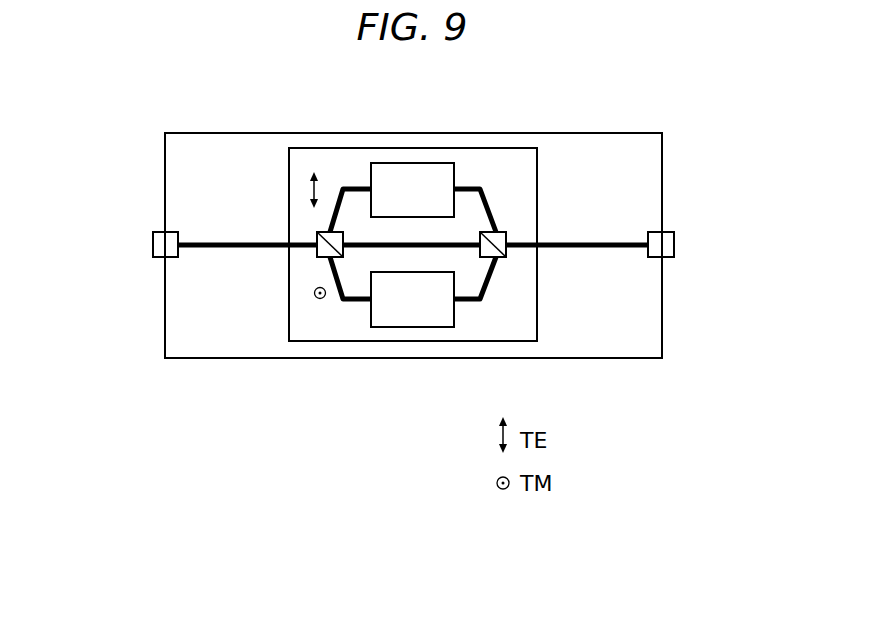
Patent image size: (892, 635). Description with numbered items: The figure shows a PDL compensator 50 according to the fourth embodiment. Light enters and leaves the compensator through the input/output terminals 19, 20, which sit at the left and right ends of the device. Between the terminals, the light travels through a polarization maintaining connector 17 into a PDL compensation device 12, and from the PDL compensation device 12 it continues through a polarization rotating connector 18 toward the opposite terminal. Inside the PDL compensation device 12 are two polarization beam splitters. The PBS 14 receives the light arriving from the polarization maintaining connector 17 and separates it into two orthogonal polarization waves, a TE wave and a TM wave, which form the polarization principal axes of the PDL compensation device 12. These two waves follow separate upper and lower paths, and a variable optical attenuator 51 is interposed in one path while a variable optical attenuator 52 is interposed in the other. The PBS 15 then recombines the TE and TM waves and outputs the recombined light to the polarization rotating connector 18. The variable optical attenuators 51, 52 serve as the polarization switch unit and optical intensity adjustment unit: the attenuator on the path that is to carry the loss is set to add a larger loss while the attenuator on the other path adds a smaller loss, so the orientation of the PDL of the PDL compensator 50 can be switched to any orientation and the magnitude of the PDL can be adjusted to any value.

The PDL compensator 50 is at (662, 333).
The PDL compensation device 12 is at (537, 330).
The input/output terminal 19 is at (152, 251).
The input/output terminal 20 is at (675, 237).
The polarization maintaining connector 17 is at (225, 243).
The polarization rotating connector 18 is at (590, 243).
The PBS 14 is at (343, 239).
The PBS 15 is at (480, 250).
The variable optical attenuator 51 is at (443, 163).
The variable optical attenuator 52 is at (393, 328).